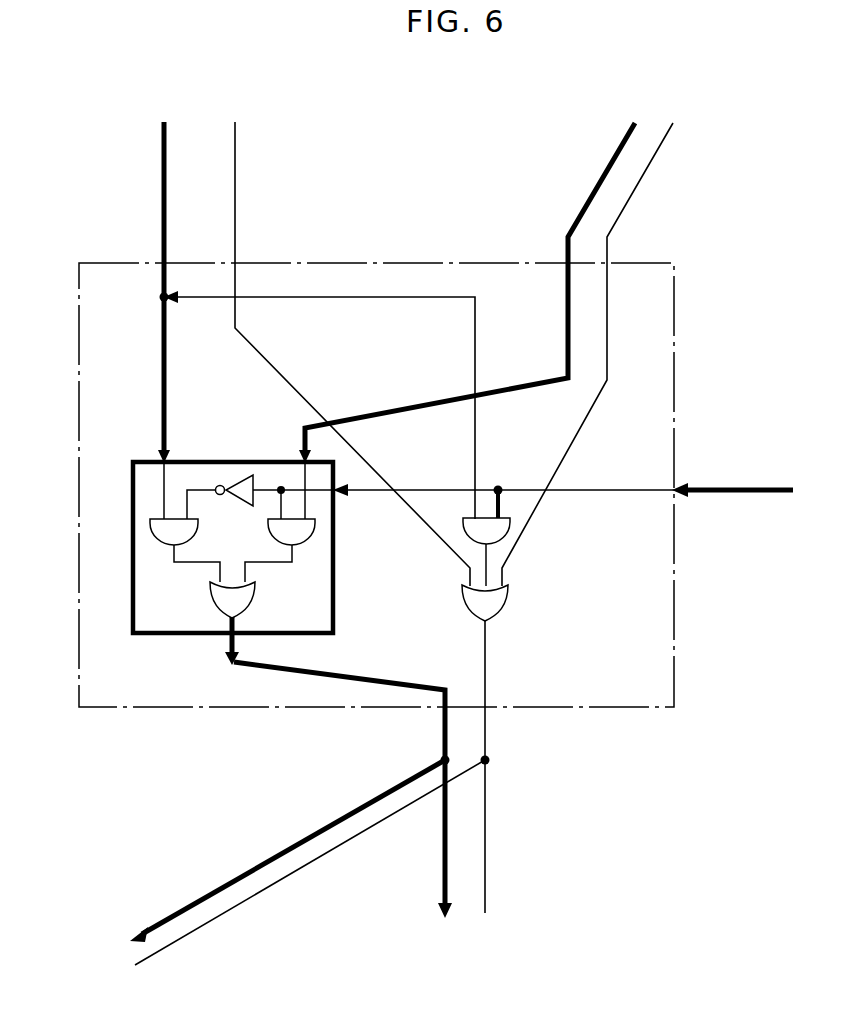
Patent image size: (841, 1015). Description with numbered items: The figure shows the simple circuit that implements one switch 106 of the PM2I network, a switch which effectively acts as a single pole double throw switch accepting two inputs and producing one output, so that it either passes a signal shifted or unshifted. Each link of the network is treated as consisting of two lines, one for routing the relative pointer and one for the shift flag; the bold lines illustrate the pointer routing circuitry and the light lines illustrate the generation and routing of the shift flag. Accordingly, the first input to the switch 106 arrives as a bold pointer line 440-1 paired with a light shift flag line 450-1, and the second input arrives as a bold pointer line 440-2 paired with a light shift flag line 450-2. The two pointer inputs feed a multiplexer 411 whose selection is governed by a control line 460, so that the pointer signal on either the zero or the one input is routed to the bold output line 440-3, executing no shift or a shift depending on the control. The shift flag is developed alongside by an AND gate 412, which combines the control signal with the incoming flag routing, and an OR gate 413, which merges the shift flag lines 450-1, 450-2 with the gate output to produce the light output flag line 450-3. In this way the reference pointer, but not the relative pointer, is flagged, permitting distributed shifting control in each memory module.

The switch 106 is at (674, 297).
The first data line 440-1 is at (160, 179).
The first parity line 450-1 is at (237, 179).
The second data line 440-2 is at (604, 174).
The second parity line 450-2 is at (642, 178).
The multiplexer 411 is at (151, 636).
The AND gate 412 is at (511, 529).
The OR gate 413 is at (509, 598).
The control line 460 is at (727, 494).
The output data line 440-3 is at (234, 874).
The output parity line 450-3 is at (248, 903).